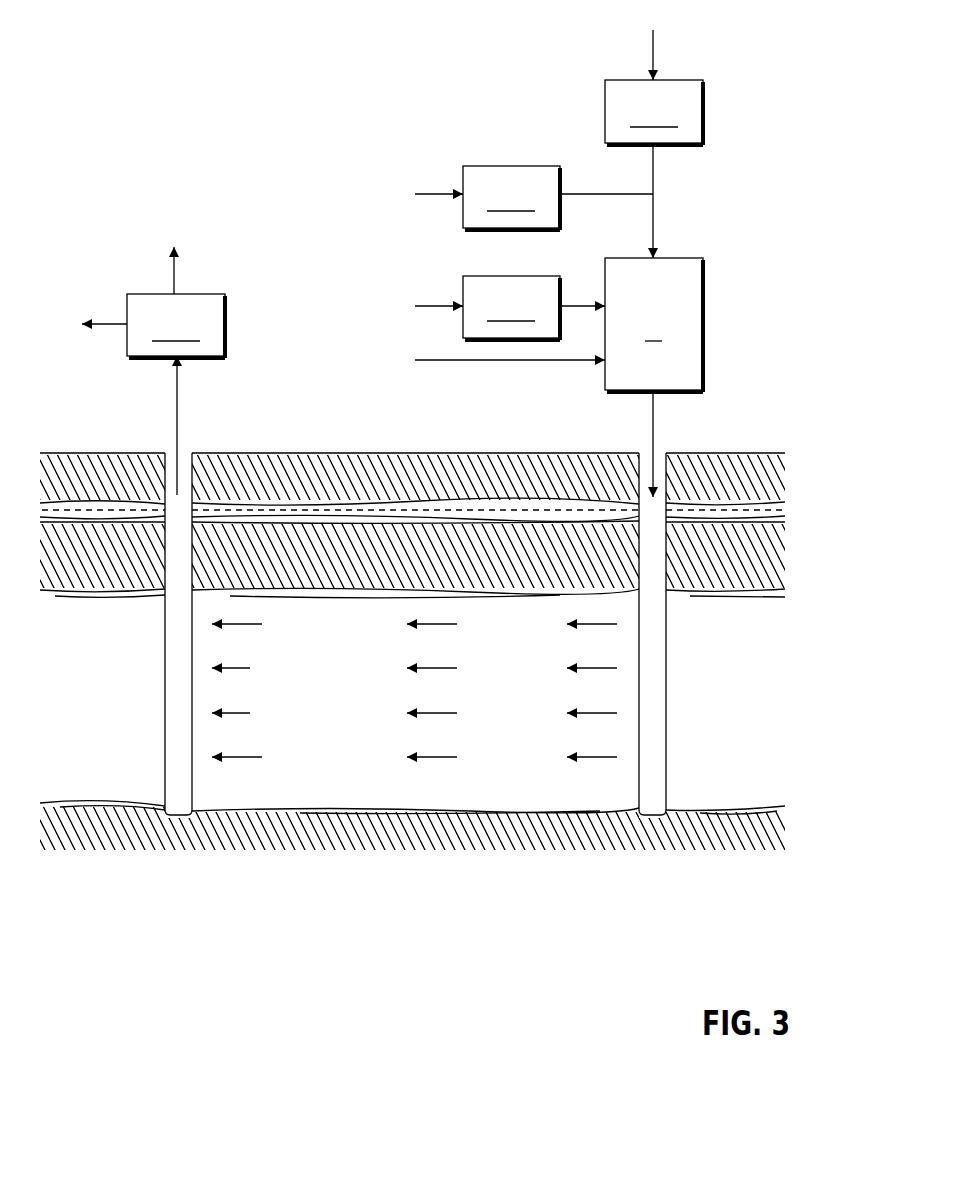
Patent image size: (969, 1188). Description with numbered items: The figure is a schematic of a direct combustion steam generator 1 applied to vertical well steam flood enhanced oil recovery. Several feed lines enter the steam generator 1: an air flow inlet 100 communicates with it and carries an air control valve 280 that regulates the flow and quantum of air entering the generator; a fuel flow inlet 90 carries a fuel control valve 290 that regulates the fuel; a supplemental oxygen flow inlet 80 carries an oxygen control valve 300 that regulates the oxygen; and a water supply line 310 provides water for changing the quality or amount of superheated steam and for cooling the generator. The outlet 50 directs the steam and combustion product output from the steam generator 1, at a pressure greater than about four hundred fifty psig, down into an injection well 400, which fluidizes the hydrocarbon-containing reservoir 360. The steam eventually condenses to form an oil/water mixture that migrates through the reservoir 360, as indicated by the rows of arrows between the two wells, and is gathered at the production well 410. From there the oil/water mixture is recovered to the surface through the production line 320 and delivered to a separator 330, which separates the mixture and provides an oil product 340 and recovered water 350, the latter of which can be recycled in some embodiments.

The air flow inlet 100 is at (650, 45).
The air control valve 280 is at (654, 112).
The fuel control valve 290 is at (511, 198).
The oxygen control valve 300 is at (511, 308).
The steam generator 1 is at (654, 325).
The fuel flow inlet 90 is at (432, 197).
The supplemental oxygen flow inlet 80 is at (432, 308).
The water supply line 310 is at (477, 363).
The outlet 50 is at (655, 422).
The injection well 400 is at (638, 468).
The hydrocarbon-containing reservoir 360 is at (688, 788).
The production well 410 is at (194, 468).
The production line 320 is at (175, 422).
The separator 330 is at (176, 326).
The oil product 340 is at (172, 280).
The recovered water 350 is at (108, 327).